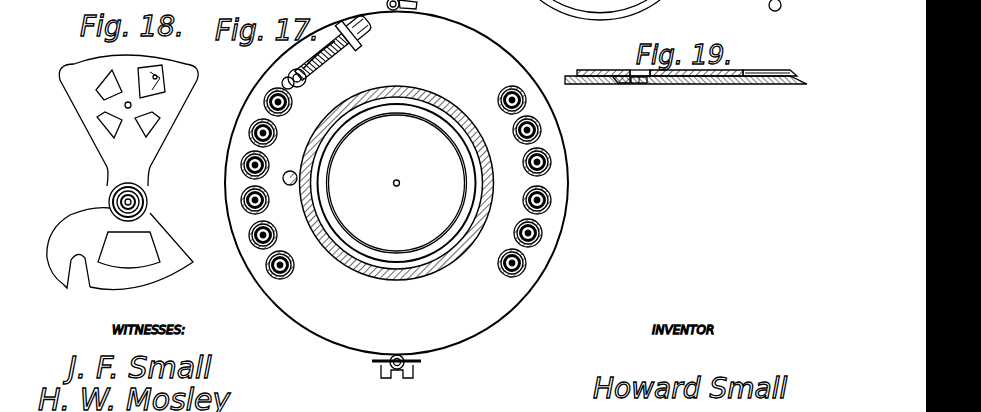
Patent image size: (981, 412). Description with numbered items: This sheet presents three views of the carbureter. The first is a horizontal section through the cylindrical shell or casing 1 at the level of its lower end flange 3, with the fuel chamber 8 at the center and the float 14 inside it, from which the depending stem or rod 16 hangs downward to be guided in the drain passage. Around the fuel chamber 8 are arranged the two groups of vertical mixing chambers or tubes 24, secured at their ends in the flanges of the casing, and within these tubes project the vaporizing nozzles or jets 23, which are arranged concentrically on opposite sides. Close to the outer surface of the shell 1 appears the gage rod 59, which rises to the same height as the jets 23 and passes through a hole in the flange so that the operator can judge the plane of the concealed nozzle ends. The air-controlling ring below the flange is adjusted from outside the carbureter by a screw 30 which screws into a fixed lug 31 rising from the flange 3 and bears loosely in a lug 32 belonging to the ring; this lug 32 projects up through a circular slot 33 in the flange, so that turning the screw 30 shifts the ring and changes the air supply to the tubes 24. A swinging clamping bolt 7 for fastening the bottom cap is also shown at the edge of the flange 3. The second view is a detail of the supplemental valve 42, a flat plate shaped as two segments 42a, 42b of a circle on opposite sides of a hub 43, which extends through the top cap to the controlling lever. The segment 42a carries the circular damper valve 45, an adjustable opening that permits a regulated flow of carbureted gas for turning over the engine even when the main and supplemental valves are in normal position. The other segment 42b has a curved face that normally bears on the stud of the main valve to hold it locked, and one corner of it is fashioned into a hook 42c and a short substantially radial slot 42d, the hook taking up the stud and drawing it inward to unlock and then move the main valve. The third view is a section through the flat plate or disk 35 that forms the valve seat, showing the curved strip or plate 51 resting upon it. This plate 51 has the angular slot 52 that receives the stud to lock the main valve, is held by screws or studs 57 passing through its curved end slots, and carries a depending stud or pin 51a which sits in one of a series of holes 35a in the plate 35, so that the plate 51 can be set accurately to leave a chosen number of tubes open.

In FIG. 17, the cylindrical shell or casing 1 is at (394, 282).
In FIG. 17, the lower end flange 3 is at (396, 183).
In FIG. 17, the swinging clamping bolt 7 is at (397, 370).
In FIG. 17, the fuel chamber 8 is at (313, 185).
In FIG. 17, the float 14 is at (397, 183).
In FIG. 17, the depending stem or rod 16 is at (395, 187).
In FIG. 17, the vaporizing nozzles or jets 23 is at (280, 252).
In FIG. 17, the vertical mixing chambers or tubes 24 is at (250, 128).
In FIG. 17, the screw 30 is at (328, 62).
In FIG. 17, the fixed lug 31 is at (366, 50).
In FIG. 17, the lug 32 is at (290, 76).
In FIG. 17, the circular slot 33 is at (323, 51).
In FIG. 17, the stop pin 59 is at (290, 171).
In FIG. 18, the supplemental valve 42 is at (112, 178).
In FIG. 18, the segment 42a is at (80, 64).
In FIG. 18, the segment 42b is at (133, 272).
In FIG. 18, the hook 42c is at (66, 280).
In FIG. 18, the radial slot 42d is at (80, 268).
In FIG. 18, the hub 43 is at (150, 201).
In FIG. 18, the circular damper valve 45 is at (107, 88).
In FIG. 19, the flat plate or disk 35 is at (730, 85).
In FIG. 19, the holes 35a is at (645, 84).
In FIG. 19, the curved strip or plate 51 is at (577, 71).
In FIG. 19, the depending stud or pin 51a is at (625, 84).
In FIG. 19, the angular slot 52 is at (632, 72).
In FIG. 19, the screws or studs 57 is at (782, 85).